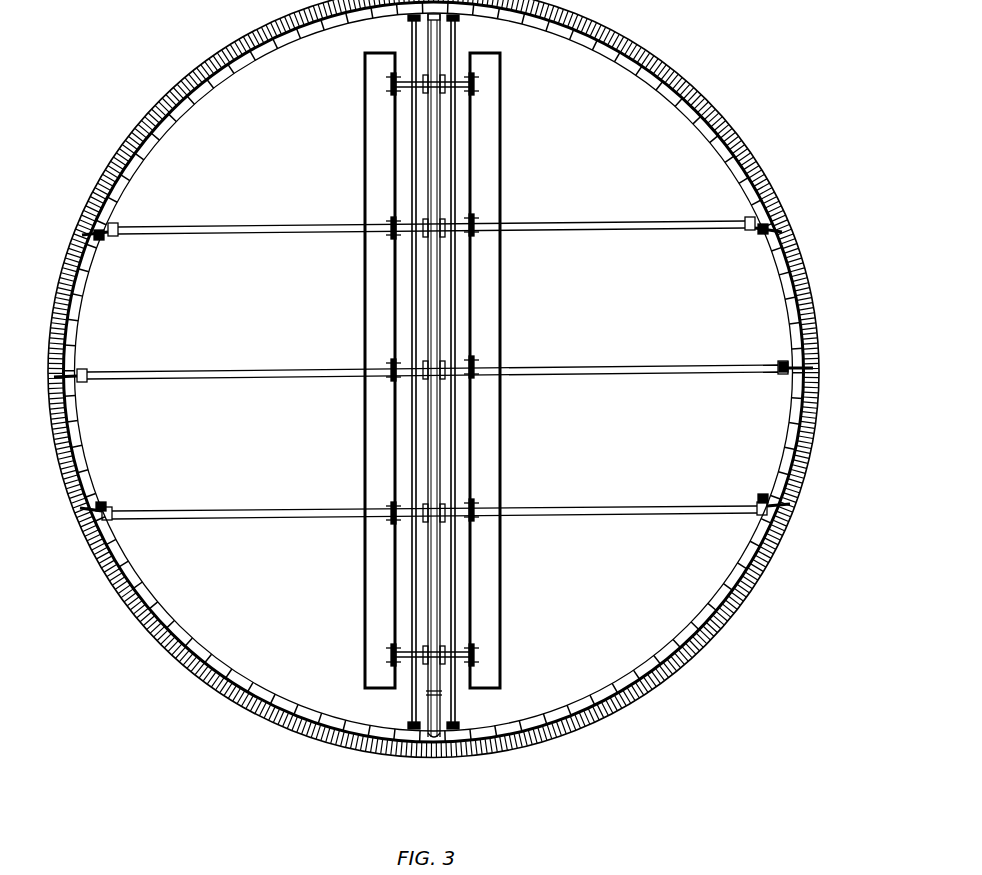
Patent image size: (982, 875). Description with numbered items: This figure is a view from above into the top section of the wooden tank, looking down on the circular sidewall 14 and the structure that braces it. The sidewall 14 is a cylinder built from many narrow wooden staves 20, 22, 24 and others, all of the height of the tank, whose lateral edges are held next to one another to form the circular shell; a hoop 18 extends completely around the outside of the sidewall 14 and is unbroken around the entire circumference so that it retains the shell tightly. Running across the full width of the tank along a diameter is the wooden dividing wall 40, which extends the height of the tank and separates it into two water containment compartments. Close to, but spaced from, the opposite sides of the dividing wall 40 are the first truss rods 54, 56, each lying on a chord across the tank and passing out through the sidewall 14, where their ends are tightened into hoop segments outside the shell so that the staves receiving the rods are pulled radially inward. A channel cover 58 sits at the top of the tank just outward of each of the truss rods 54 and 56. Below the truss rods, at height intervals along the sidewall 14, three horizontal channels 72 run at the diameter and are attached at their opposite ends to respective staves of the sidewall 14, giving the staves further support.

The sidewall 14 is at (694, 130).
The hoop 18 is at (700, 93).
The stave 20 is at (814, 307).
The stave 22 is at (808, 278).
The stave 24 is at (802, 252).
The dividing wall 40 is at (437, 152).
The first truss rod 54 is at (409, 193).
The first truss rod 56 is at (457, 196).
The channel cover 58 is at (378, 303).
The horizontal channel 72 is at (575, 230).